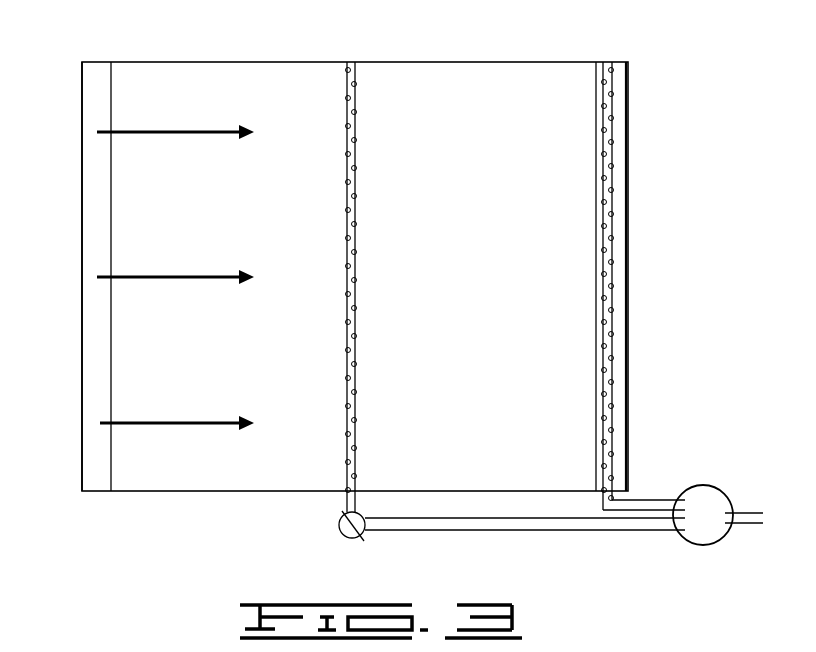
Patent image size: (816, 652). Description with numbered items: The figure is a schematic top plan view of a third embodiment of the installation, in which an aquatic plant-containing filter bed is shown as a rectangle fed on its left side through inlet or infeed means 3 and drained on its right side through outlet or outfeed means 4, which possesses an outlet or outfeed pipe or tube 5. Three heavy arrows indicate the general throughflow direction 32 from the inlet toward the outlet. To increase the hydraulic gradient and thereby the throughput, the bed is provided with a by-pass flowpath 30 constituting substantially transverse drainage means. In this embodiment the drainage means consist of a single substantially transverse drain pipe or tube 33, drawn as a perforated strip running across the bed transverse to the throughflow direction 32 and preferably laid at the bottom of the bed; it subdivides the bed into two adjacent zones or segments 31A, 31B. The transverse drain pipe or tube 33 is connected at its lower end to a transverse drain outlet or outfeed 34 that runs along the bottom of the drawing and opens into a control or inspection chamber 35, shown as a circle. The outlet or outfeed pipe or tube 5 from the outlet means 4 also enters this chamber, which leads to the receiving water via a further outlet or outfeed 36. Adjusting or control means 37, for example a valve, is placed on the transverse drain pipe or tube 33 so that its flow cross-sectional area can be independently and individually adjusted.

The inlet or infeed means 3 is at (92, 240).
The outlet or outfeed means 4 is at (623, 270).
The outlet or outfeed pipe or tube 5 is at (648, 500).
The by-pass flowpath 30 is at (445, 192).
The zone or segment 31A is at (183, 75).
The zone or segment 31B is at (517, 80).
The general throughflow direction 32 is at (195, 130).
The substantially transverse drain pipe or tube 33 is at (360, 122).
The transverse drain outlet or outfeed 34 is at (478, 531).
The control or inspection chamber 35 is at (698, 505).
The further outlet or outfeed 36 is at (733, 524).
The adjusting or control means 37 is at (338, 532).